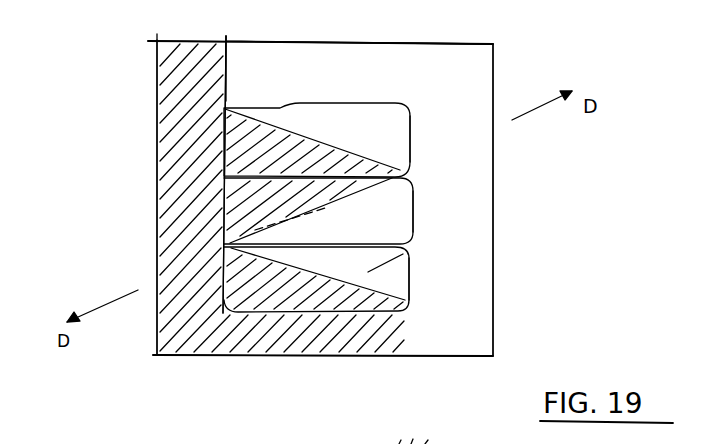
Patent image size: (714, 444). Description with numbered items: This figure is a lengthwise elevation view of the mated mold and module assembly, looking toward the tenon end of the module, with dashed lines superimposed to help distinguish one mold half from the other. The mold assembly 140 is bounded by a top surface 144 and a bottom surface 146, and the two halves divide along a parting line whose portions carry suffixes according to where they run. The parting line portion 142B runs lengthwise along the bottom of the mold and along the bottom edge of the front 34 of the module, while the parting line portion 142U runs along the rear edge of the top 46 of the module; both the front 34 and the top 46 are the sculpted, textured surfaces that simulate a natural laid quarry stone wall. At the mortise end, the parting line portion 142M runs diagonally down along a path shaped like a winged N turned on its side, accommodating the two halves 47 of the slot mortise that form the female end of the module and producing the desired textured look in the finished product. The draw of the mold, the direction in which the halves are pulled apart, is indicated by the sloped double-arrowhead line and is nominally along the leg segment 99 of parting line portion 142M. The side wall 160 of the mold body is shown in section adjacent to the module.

The body 140 is at (460, 95).
The parting line portion 142U is at (228, 34).
The parting line portion 142M is at (387, 250).
The parting line portion 142B is at (403, 313).
The top surface 144 is at (443, 46).
The bottom surface 146 is at (254, 361).
The side wall 160 is at (167, 243).
The top side 46 is at (323, 98).
The halves of the slot mortise 47 is at (411, 147).
The front side 34 is at (416, 212).
The leg segment 99 is at (323, 212).